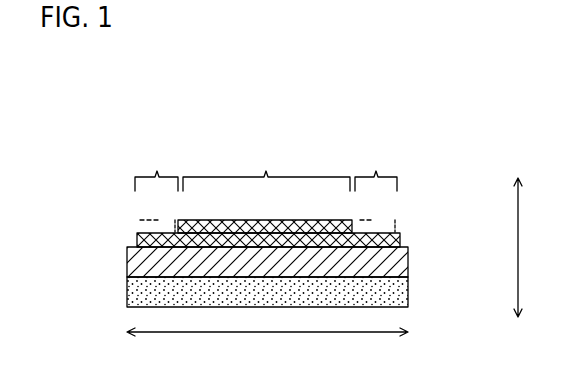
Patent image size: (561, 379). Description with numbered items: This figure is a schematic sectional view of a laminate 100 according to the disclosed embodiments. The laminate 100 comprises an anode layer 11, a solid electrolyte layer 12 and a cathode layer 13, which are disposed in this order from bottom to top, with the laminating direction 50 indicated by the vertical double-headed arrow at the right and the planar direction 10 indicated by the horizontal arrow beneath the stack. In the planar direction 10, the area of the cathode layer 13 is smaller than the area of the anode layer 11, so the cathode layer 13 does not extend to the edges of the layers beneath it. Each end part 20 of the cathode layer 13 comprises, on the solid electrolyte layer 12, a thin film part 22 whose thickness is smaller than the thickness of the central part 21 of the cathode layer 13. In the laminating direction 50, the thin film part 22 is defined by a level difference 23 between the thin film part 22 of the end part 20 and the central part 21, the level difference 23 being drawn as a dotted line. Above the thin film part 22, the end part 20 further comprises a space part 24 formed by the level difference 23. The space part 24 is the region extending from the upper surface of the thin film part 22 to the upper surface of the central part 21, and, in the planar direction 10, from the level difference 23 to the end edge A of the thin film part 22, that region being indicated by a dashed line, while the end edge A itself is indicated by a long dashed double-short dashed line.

The laminate 100 is at (150, 63).
The planar direction 10 is at (283, 333).
The anode layer 11 is at (392, 290).
The solid electrolyte layer 12 is at (405, 263).
The cathode layer 13 is at (243, 220).
The end part 20 is at (266, 166).
The central part 21 is at (266, 166).
The thin film part 22 is at (152, 245).
The level difference 23 is at (172, 218).
The space part 24 is at (137, 222).
The end edge A is at (137, 238).
The laminating direction 50 is at (516, 231).